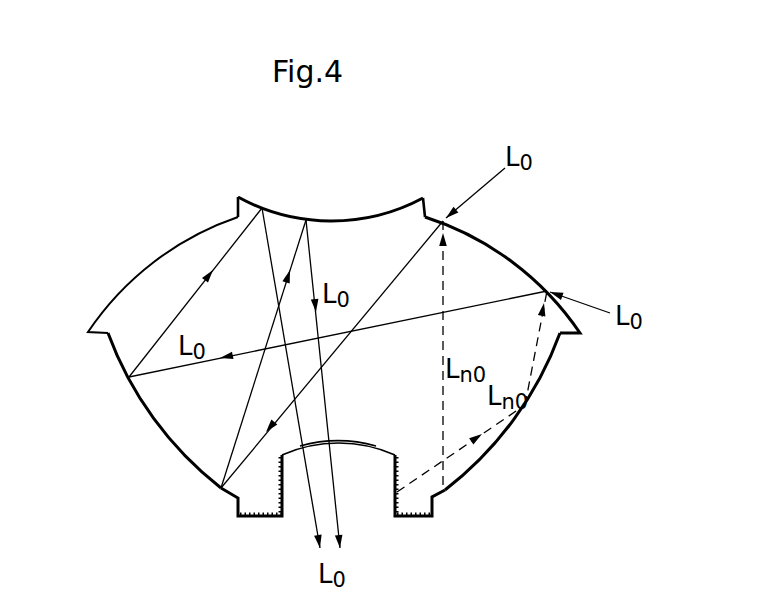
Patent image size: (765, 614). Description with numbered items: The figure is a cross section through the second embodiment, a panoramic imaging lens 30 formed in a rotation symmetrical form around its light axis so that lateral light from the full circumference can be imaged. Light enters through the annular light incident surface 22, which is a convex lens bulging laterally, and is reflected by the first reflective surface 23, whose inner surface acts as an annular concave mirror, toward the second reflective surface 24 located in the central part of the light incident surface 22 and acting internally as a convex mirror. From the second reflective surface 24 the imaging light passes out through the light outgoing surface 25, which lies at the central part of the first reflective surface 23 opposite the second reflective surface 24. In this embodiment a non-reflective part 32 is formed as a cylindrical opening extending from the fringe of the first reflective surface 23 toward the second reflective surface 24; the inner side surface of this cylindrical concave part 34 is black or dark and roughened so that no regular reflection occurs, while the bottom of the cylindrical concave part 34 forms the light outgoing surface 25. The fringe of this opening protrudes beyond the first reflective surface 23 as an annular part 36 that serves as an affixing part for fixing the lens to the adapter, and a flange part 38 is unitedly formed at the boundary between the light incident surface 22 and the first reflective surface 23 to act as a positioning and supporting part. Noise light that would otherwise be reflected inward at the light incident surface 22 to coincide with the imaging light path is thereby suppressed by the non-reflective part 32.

The light incident surface 22 is at (530, 270).
The first reflective surface 23 is at (550, 370).
The second reflective surface 24 is at (362, 218).
The light outgoing surface 25 is at (373, 445).
The panoramic imaging lens 30 is at (533, 222).
The non-reflective part 32 is at (285, 498).
The cylindrical concave part 34 is at (367, 505).
The annular part 36 is at (435, 505).
The flange part 38 is at (102, 334).